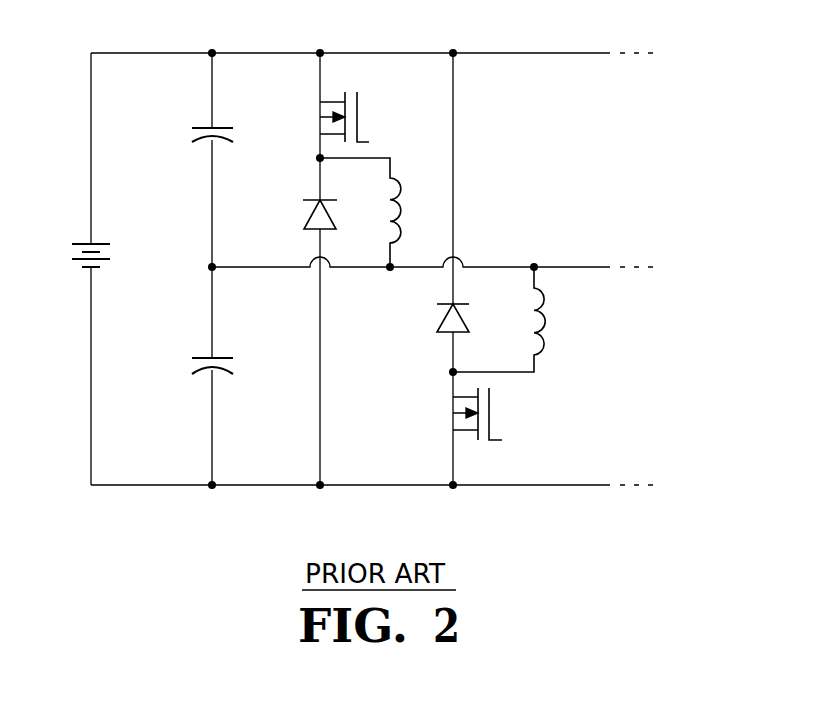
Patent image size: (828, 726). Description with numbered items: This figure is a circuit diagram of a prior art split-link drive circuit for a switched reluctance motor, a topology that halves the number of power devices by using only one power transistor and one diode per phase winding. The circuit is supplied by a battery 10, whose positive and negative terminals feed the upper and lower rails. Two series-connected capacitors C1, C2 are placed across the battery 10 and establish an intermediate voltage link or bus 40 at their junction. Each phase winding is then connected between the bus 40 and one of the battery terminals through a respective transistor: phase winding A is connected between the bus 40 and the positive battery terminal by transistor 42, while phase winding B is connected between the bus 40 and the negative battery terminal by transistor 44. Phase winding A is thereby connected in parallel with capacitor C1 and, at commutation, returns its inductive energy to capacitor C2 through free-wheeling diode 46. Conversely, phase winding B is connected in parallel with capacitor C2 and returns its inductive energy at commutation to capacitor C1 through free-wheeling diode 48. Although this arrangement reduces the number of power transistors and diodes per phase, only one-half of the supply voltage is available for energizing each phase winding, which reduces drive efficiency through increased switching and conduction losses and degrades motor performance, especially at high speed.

The battery 10 is at (81, 243).
The capacitor C1 is at (205, 125).
The capacitor C2 is at (203, 355).
The intermediate voltage link or bus 40 is at (245, 268).
The transistor 42 is at (333, 101).
The transistor 44 is at (463, 430).
The free-wheeling diode 46 is at (306, 219).
The free-wheeling diode 48 is at (437, 318).
The phase winding A is at (402, 212).
The phase winding B is at (545, 323).